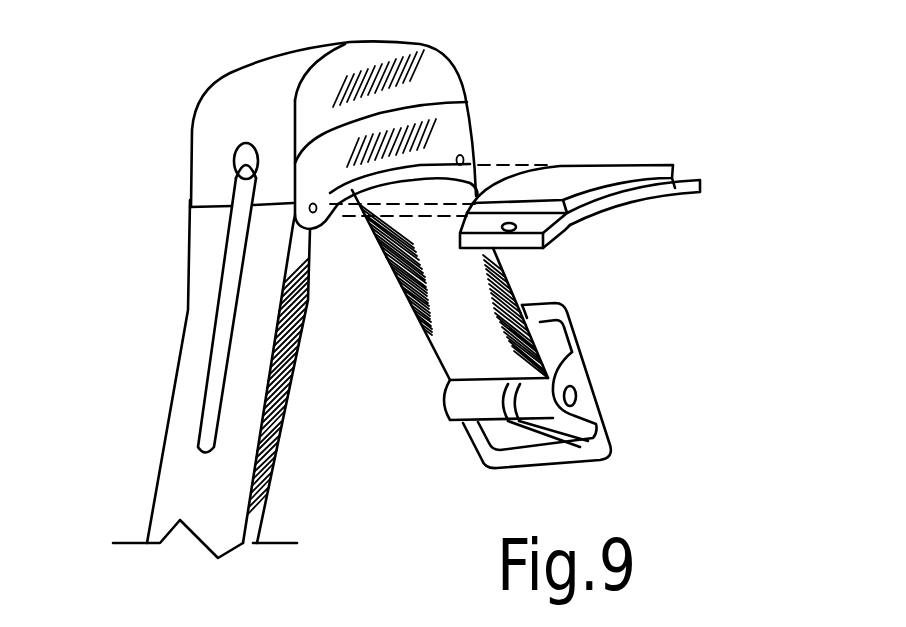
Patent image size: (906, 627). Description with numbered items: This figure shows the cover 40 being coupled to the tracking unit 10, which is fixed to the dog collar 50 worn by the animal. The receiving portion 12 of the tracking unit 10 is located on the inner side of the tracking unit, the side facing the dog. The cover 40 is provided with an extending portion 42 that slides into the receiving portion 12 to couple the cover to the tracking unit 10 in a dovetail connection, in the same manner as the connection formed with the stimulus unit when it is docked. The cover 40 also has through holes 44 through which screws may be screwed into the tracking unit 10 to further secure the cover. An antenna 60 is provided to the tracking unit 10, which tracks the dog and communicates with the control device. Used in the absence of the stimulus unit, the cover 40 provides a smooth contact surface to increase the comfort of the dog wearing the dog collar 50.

The tracking unit 10 is at (440, 83).
The receiving portion 12 is at (358, 217).
The cover 40 is at (690, 178).
The extending portion 42 is at (580, 177).
The through holes 44 is at (516, 226).
The dog collar 50 is at (287, 407).
The antenna 60 is at (223, 313).